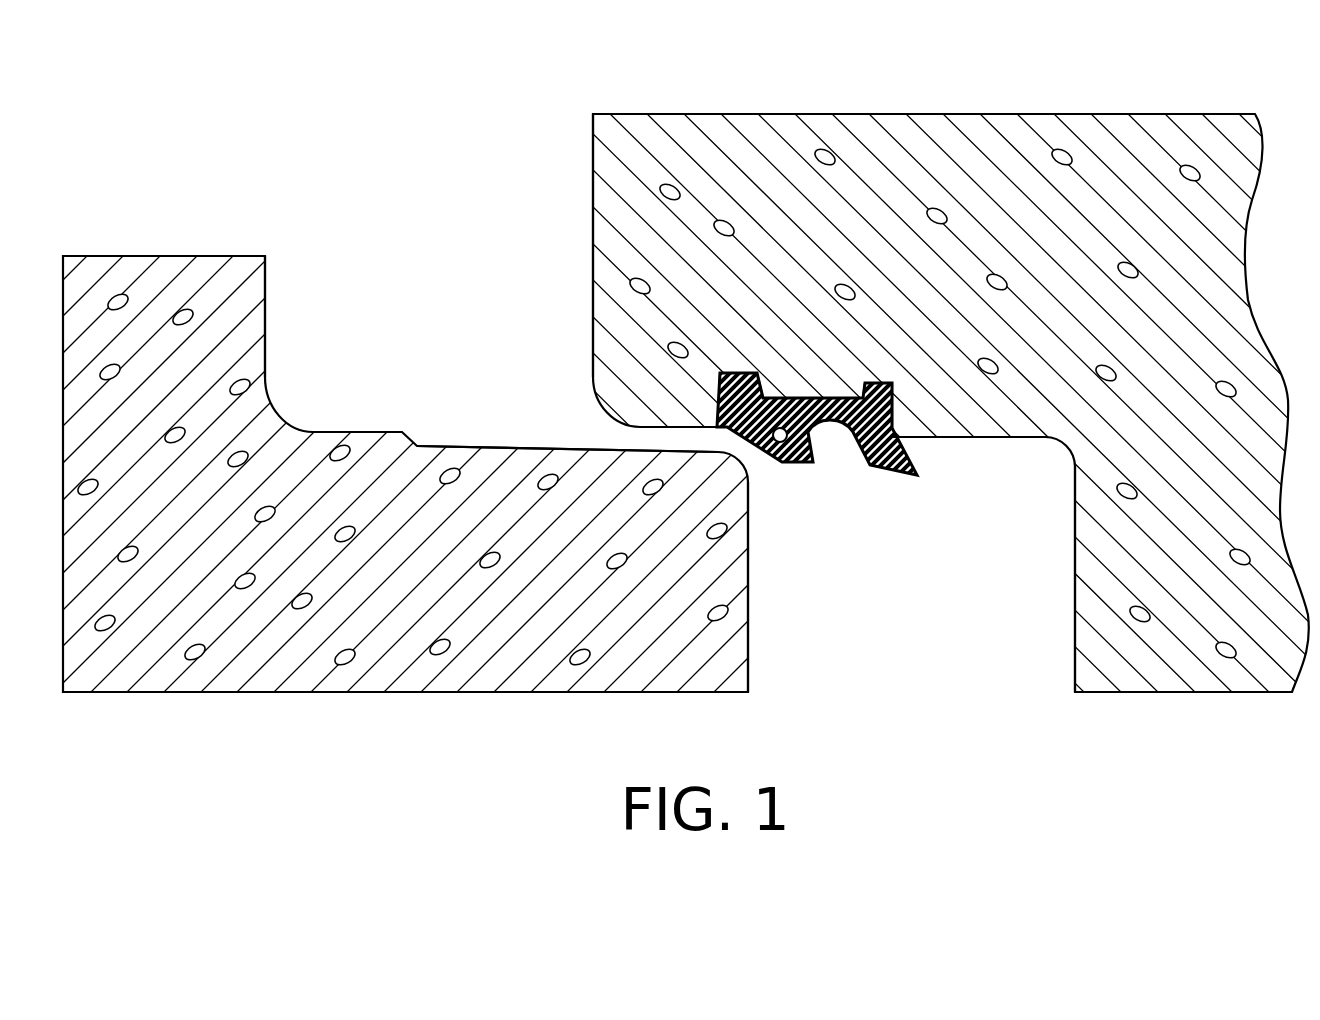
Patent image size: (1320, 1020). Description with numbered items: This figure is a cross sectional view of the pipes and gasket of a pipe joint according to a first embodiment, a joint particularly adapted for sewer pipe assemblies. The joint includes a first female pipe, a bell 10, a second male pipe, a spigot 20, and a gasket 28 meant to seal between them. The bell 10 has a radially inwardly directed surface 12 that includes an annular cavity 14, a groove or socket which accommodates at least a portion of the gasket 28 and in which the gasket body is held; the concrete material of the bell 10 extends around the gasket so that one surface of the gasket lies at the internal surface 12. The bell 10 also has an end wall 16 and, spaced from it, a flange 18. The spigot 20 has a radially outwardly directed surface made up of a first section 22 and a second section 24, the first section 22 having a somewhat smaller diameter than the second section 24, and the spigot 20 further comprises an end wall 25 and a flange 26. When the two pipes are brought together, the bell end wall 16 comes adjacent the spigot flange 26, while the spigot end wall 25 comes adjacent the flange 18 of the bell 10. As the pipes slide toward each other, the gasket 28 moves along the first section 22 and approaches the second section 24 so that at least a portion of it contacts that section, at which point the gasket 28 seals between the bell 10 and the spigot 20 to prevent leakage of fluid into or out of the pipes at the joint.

The bell 10 is at (1007, 123).
The radially inwardly directed surface 12 is at (955, 440).
The annular cavity 14 is at (815, 398).
The end wall 16 is at (596, 190).
The flange 18 is at (1073, 630).
The spigot 20 is at (478, 690).
The first section 22 is at (457, 447).
The second section 24 is at (336, 432).
The end wall 25 is at (752, 637).
The flange 26 is at (268, 322).
The gasket 28 is at (852, 460).